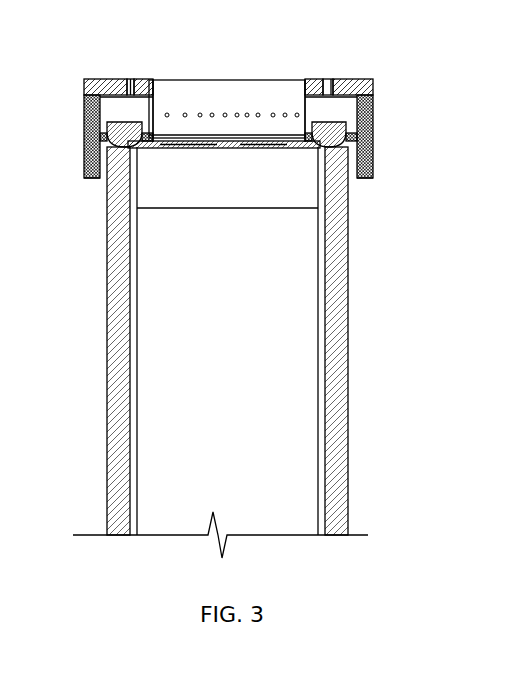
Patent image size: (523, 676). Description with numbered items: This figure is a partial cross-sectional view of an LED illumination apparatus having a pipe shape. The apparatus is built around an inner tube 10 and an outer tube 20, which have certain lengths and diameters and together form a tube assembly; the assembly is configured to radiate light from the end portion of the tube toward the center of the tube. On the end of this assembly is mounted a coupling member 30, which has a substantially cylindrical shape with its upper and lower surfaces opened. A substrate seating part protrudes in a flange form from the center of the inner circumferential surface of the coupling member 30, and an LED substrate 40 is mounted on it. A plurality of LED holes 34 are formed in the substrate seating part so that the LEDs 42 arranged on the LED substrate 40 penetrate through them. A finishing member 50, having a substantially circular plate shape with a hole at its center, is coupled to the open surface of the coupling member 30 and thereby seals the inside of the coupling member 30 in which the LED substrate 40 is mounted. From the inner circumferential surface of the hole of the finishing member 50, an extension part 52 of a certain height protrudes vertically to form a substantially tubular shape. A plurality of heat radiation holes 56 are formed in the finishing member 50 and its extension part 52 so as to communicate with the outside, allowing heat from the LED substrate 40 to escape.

The inner tube 10 is at (234, 352).
The outer tube 20 is at (349, 347).
The coupling member 30 is at (374, 152).
The LED holes 34 is at (83, 155).
The LED substrate 40 is at (341, 120).
The LEDs 42 is at (105, 179).
The finishing member 50 is at (356, 79).
The extension part 52 is at (298, 108).
The heat radiation holes 56 is at (228, 114).